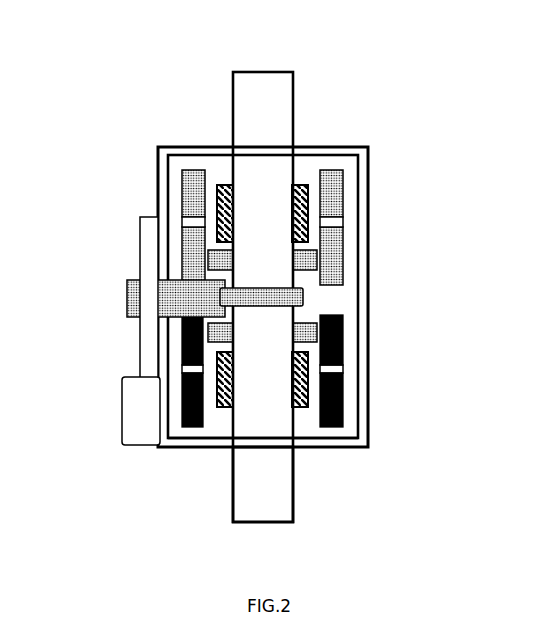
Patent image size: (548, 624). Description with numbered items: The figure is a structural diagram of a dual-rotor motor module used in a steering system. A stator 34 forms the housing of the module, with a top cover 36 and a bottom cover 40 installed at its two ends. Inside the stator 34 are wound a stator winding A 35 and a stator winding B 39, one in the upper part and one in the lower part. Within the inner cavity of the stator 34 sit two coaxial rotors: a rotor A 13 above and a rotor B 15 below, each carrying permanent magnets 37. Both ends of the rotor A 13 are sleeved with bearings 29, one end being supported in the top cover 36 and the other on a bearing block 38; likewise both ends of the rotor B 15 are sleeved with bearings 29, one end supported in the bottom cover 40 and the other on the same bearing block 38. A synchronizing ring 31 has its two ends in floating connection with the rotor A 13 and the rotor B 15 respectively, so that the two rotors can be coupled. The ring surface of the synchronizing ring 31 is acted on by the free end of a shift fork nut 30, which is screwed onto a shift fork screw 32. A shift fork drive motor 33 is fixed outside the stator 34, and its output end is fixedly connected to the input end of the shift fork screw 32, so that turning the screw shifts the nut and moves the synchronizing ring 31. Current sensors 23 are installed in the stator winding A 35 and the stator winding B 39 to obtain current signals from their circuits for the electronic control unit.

The rotor A 13 is at (267, 103).
The rotor B 15 is at (265, 485).
The current sensors 23 is at (207, 223).
The bearings 29 is at (213, 323).
The shift fork nut 30 is at (127, 279).
The synchronizing ring 31 is at (262, 295).
The shift fork screw 32 is at (140, 340).
The shift fork drive motor 33 is at (123, 413).
The stator 34 is at (175, 430).
The stator winding A 35 is at (195, 170).
The top cover 36 is at (368, 148).
The permanent magnets 37 is at (228, 352).
The bearing block 38 is at (318, 259).
The stator winding B 39 is at (203, 427).
The bottom cover 40 is at (368, 447).